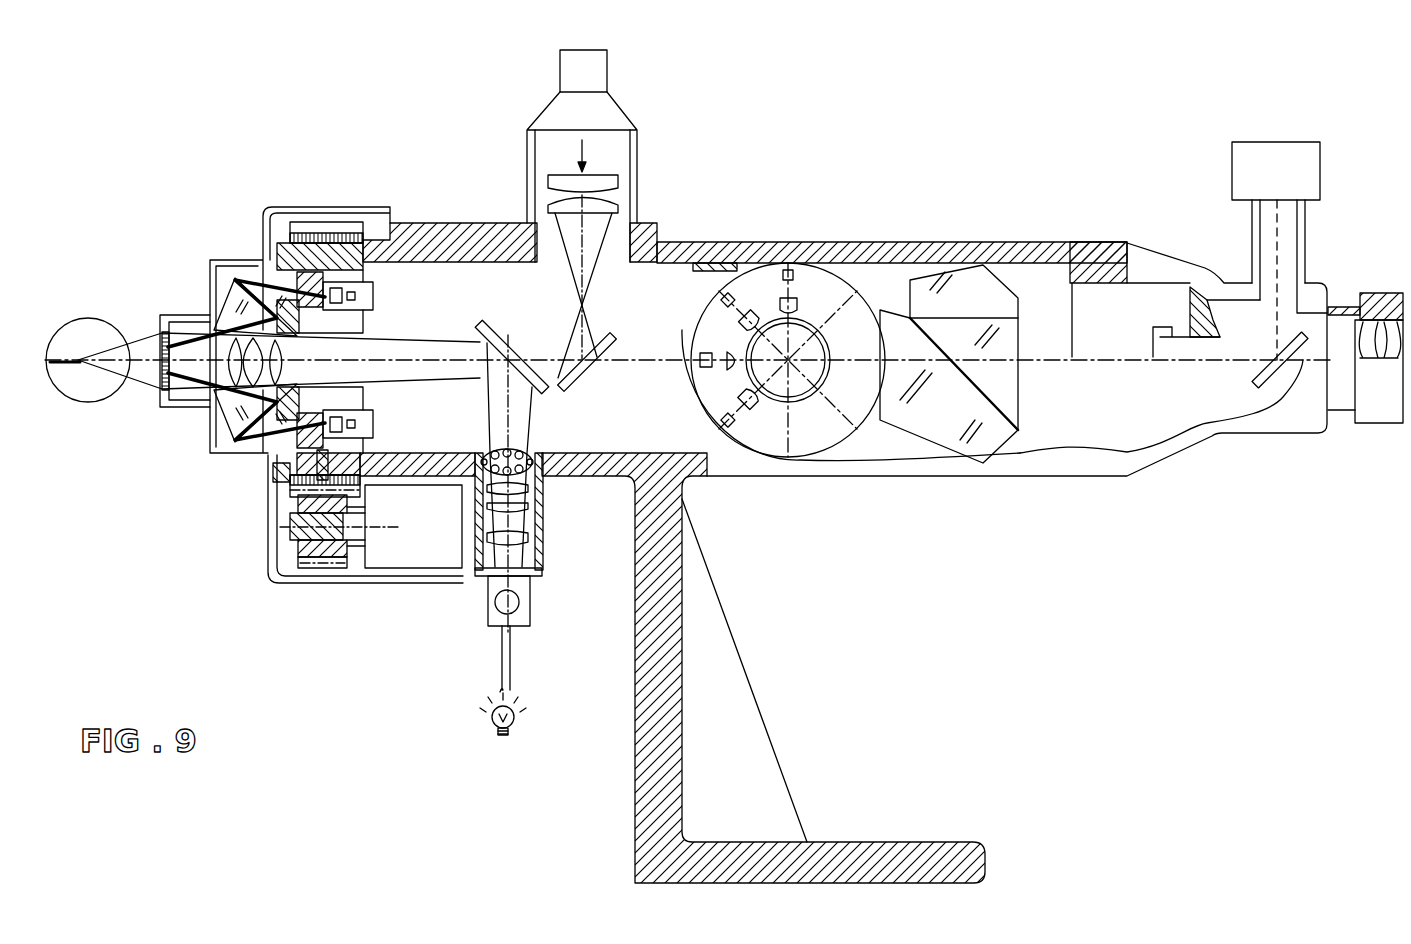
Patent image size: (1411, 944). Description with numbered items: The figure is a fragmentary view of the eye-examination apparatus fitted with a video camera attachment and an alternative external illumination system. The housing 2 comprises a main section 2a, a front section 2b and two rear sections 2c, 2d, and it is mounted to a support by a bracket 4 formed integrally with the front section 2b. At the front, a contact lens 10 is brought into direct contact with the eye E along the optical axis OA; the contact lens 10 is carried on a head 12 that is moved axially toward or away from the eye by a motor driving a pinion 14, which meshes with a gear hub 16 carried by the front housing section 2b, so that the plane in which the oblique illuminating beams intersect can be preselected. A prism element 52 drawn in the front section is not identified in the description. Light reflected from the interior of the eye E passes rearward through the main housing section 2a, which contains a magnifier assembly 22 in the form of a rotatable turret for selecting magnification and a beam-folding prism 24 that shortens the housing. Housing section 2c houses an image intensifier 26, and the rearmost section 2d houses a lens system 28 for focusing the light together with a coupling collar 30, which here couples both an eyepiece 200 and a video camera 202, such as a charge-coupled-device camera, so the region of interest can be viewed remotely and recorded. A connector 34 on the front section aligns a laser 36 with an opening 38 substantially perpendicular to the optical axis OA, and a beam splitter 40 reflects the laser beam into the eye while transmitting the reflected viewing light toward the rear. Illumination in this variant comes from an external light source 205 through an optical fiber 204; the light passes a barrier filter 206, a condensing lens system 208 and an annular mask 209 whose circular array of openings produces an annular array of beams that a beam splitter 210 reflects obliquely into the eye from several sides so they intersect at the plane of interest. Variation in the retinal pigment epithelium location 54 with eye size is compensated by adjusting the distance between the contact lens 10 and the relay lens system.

The housing 2 is at (846, 224).
The main housing section 2a is at (773, 242).
The front housing section 2b is at (660, 243).
The rear housing section 2c is at (1122, 262).
The rearmost housing section 2d is at (1193, 327).
The bracket 4 is at (653, 760).
The contact lens 10 is at (130, 333).
The head 12 is at (270, 477).
The pinion 14 is at (303, 553).
The gear hub 16 is at (290, 487).
The magnifier assembly 22 is at (723, 455).
The beam-folding prism 24 is at (873, 433).
The image intensifier 26 is at (1161, 443).
The lens system 28 is at (1193, 360).
The coupling collar 30 is at (1343, 300).
The connector 34 is at (653, 223).
The laser 36 is at (640, 137).
The opening 38 is at (620, 247).
The beam splitter 40 is at (587, 382).
The illumination prisms 52 is at (203, 315).
The RPE location 54 is at (48, 381).
The eyepiece 200 is at (1385, 415).
The video camera 202 is at (1230, 180).
The optical fiber 204 is at (500, 682).
The light source 205 is at (492, 727).
The barrier filter 206 is at (540, 577).
The condensing lens system 208 is at (528, 537).
The annular mask 209 is at (490, 453).
The beam splitter 210 is at (510, 345).
The eye E is at (65, 343).
The optical axis OA is at (422, 372).